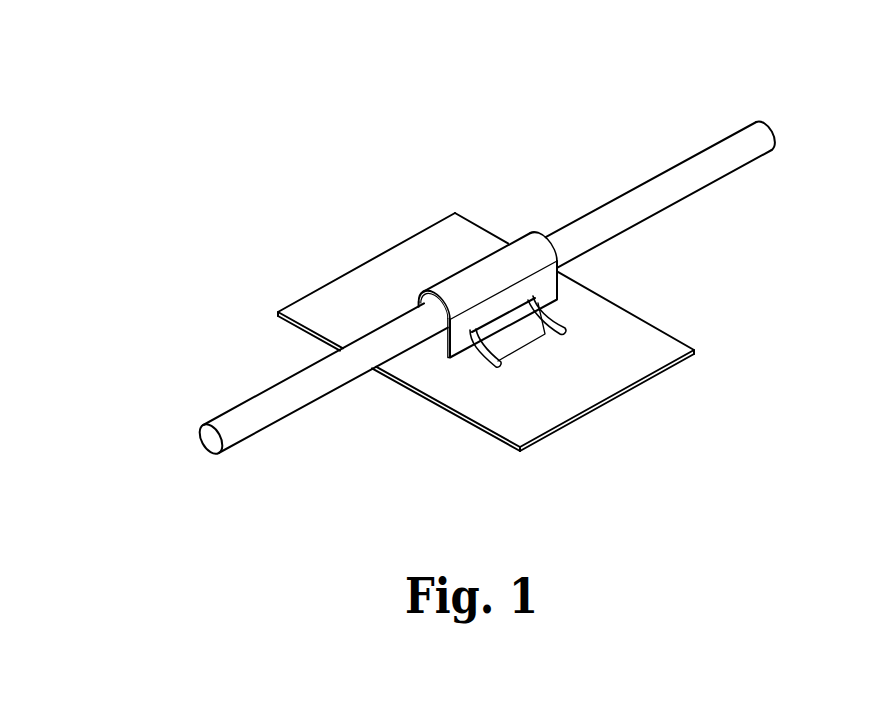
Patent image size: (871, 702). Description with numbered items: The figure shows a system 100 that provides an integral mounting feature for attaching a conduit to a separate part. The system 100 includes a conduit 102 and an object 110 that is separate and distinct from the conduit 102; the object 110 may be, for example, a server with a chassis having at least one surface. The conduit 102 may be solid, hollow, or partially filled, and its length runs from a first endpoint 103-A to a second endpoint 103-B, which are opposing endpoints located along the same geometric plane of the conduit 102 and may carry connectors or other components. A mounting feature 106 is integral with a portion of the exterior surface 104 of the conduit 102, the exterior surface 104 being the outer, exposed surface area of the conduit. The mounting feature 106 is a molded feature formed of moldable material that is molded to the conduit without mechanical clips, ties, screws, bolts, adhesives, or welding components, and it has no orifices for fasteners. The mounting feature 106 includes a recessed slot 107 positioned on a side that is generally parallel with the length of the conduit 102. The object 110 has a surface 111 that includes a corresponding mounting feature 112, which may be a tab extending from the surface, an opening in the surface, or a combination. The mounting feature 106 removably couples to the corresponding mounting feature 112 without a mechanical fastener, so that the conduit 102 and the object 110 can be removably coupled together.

The system 100 is at (353, 107).
The conduit 102 is at (228, 408).
The first endpoint 103-A is at (200, 443).
The second endpoint 103-B is at (773, 123).
The exterior surface 104 is at (272, 388).
The mounting feature 106 is at (540, 233).
The slot 107 is at (548, 282).
The object 110 is at (419, 231).
The surface 111 is at (642, 360).
The corresponding mounting feature 112 is at (517, 333).